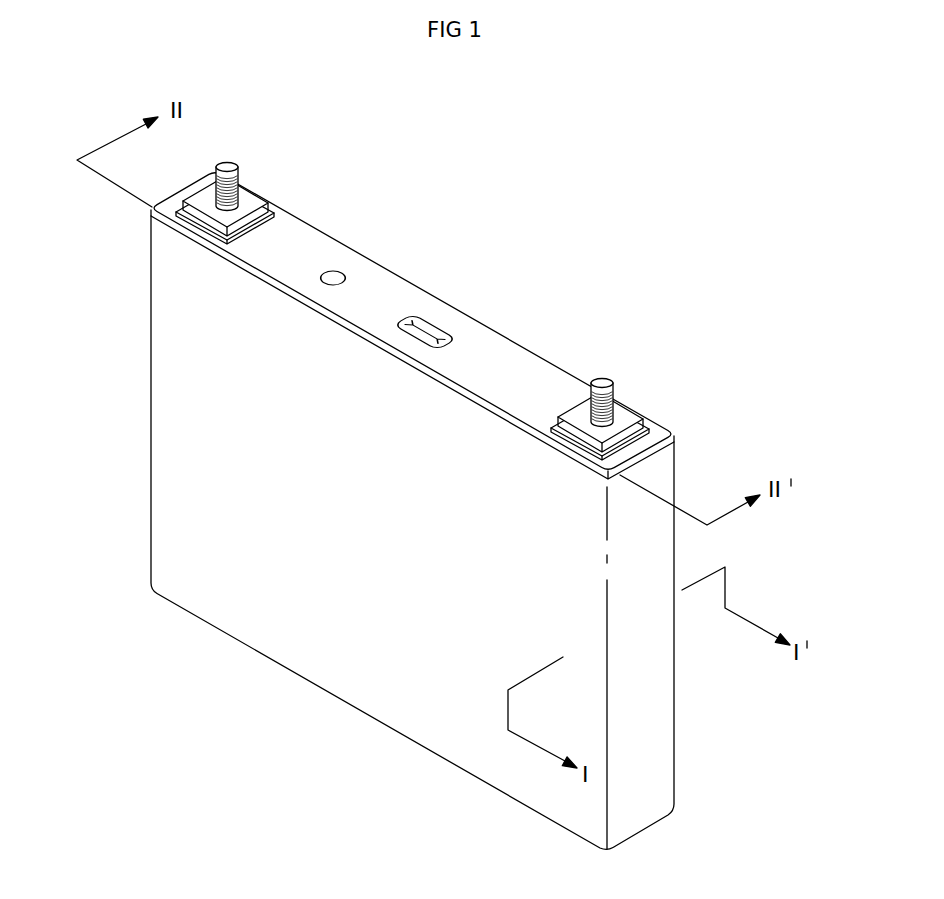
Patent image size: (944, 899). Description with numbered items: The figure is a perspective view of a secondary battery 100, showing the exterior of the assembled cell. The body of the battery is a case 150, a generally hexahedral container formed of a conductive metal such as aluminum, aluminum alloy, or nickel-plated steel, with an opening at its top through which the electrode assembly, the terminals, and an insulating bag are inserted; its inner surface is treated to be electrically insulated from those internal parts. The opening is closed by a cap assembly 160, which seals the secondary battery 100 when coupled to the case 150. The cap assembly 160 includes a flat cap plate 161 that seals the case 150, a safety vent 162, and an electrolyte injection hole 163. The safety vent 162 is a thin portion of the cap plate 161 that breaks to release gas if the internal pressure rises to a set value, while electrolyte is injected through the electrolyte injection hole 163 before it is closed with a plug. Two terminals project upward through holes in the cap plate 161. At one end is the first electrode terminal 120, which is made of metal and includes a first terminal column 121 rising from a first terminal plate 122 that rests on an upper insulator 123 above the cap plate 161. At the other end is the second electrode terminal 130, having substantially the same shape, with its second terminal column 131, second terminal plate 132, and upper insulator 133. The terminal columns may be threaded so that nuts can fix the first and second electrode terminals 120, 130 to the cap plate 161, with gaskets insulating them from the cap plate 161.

The secondary battery 100 is at (450, 461).
The first electrode terminal 120 is at (266, 158).
The first terminal column 121 is at (232, 167).
The first terminal plate 122 is at (250, 200).
The upper insulator 123 is at (275, 213).
The second electrode terminal 130 is at (650, 383).
The second terminal column 131 is at (602, 382).
The second terminal plate 132 is at (625, 417).
The upper insulator 133 is at (653, 427).
The case 150 is at (355, 685).
The cap assembly 160 is at (412, 326).
The cap plate 161 is at (397, 283).
The safety vent 162 is at (432, 325).
The electrolyte injection hole 163 is at (337, 275).